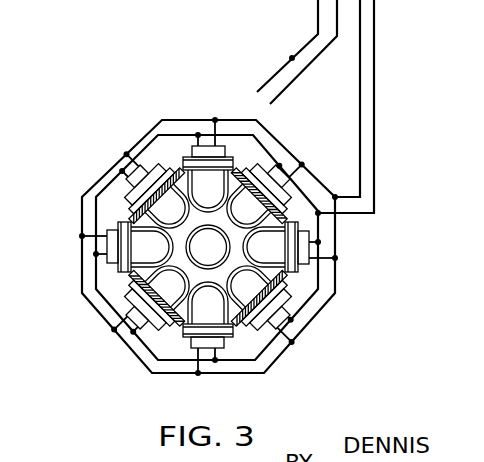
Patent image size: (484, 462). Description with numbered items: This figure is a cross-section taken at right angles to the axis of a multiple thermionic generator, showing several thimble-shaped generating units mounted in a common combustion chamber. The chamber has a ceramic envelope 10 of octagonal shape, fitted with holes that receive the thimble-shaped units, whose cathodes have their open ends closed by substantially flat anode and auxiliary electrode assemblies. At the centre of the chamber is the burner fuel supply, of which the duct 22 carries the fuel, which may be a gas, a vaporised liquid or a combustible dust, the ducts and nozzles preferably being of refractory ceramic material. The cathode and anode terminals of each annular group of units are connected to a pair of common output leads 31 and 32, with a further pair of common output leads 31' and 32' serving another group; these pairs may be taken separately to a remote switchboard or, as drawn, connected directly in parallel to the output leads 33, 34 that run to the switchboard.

The ceramic envelope 10 is at (125, 274).
The fuel duct 22 is at (131, 224).
The common output lead 31 is at (249, 247).
The common output lead 32 is at (259, 246).
The common output lead 31' is at (277, 46).
The common output lead 32' is at (287, 52).
The output lead 33 is at (360, 123).
The output lead 34 is at (374, 152).